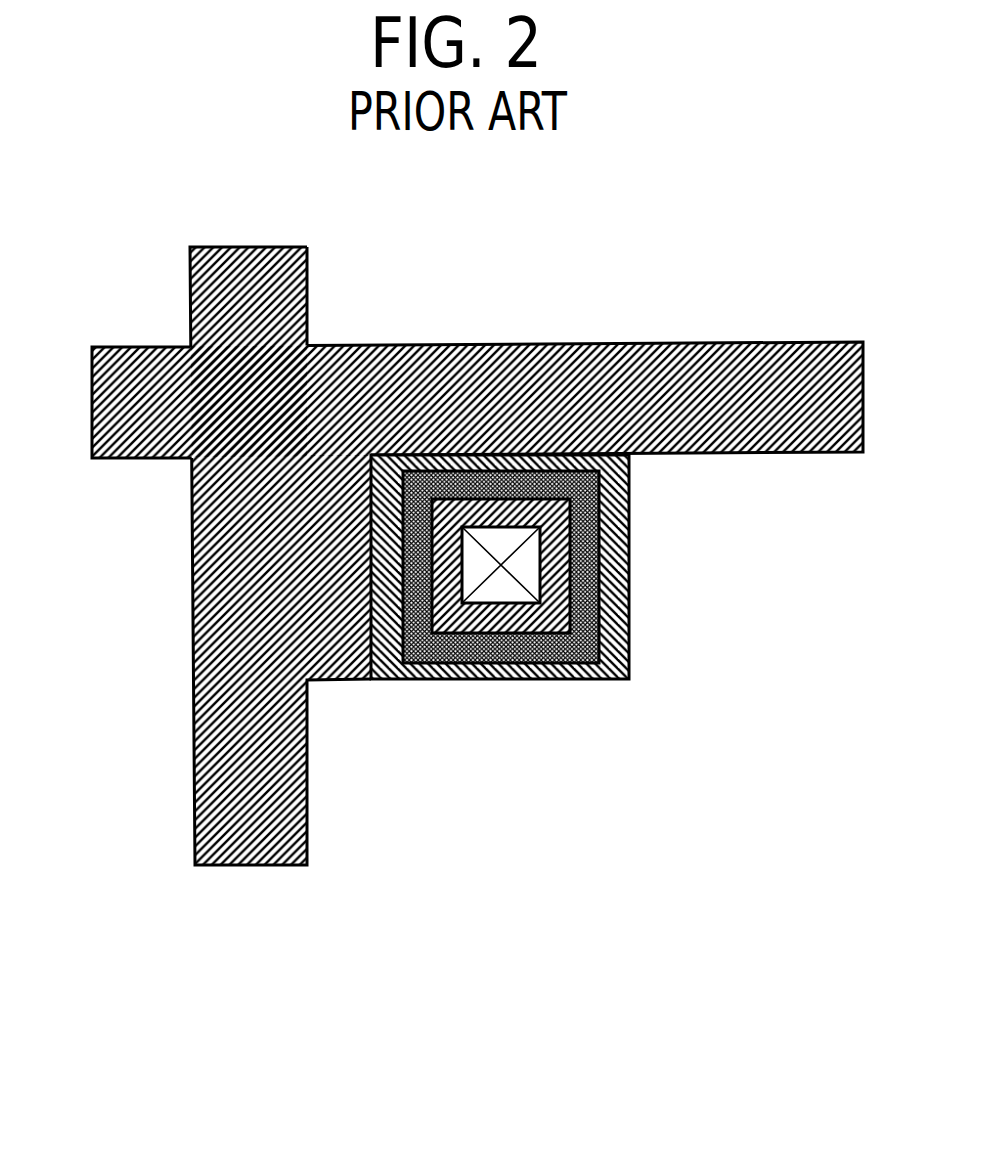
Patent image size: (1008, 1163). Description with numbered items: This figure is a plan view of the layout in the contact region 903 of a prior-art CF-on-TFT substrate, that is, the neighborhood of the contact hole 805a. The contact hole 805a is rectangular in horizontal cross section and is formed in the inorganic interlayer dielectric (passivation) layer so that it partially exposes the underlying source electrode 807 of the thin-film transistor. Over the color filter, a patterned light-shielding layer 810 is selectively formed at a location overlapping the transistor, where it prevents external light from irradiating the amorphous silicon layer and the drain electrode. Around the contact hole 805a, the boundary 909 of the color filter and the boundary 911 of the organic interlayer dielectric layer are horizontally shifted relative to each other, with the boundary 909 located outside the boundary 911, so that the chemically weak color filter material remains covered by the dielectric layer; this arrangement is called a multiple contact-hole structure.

The contact hole 805a is at (490, 533).
The source electrode 807 is at (388, 668).
The light-shielding layer 810 is at (265, 830).
The contact region 903 is at (655, 475).
The boundary of the color filter 909 is at (495, 668).
The boundary of the dielectric layer 911 is at (615, 603).